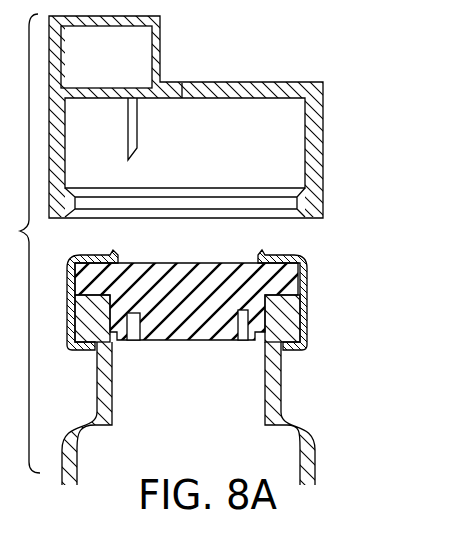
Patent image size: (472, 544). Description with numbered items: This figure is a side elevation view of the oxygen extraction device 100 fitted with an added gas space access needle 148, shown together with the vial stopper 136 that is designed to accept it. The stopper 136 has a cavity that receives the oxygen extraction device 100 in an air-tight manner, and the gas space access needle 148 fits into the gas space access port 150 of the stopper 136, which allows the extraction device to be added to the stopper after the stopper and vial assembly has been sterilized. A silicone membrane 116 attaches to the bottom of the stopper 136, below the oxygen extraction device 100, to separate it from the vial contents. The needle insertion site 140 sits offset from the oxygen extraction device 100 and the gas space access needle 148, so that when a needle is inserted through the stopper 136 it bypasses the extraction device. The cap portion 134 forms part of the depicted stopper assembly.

The oxygen extraction device 100 is at (140, 50).
The needle insertion site 140 is at (213, 88).
The gas space access needle 148 is at (137, 132).
The stopper 136 is at (283, 270).
The gas space access port 150 is at (243, 322).
The silicone membrane 116 is at (193, 343).
The cap 134 is at (280, 392).